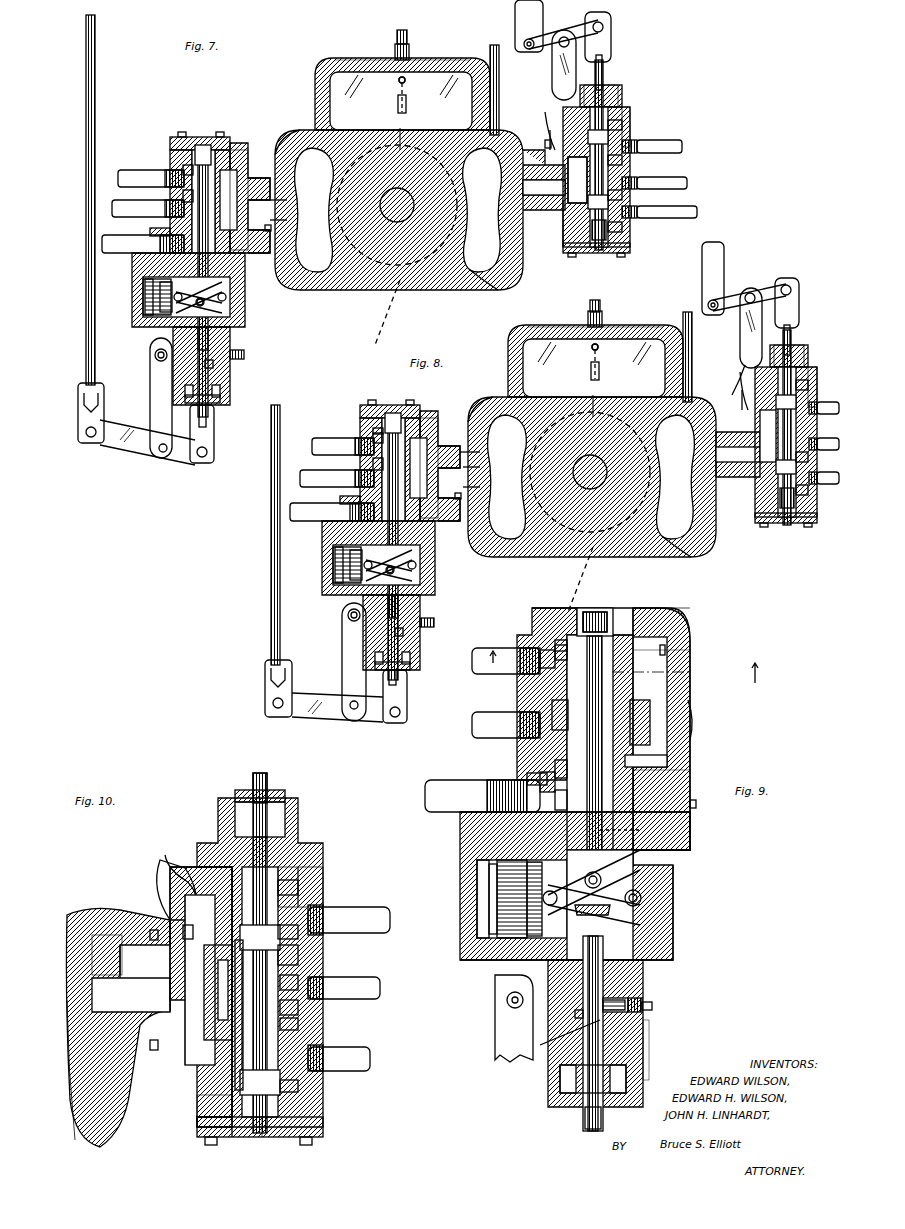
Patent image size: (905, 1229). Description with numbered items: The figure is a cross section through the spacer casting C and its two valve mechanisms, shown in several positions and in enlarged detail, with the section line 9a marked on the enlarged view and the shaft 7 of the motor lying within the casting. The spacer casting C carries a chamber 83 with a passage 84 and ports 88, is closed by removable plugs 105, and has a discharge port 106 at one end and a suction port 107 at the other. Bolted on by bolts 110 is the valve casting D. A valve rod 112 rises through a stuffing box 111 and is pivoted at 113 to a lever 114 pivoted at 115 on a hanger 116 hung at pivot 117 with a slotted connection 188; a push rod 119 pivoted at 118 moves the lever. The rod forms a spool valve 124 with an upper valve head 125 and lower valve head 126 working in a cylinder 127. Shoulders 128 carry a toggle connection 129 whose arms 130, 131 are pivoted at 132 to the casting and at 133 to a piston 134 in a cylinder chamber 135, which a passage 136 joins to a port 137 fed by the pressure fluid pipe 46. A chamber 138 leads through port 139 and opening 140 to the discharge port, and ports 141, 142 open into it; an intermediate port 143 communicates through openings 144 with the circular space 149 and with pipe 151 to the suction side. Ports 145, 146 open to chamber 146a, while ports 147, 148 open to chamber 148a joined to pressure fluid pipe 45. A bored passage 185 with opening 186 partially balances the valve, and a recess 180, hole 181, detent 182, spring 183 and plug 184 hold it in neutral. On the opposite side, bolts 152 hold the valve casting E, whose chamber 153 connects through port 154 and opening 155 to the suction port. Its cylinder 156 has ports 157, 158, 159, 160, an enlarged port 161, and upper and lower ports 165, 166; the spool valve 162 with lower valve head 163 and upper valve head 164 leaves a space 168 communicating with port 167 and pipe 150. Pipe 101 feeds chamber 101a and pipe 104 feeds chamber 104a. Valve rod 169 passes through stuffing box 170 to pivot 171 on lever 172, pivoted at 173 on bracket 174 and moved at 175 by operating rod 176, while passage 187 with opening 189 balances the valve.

In FIG. 7, the shaft 7 is at (380, 316).
In FIG. 9, the section line 9a— 9a is at (630, 666).
In FIG. 7, the pressure fluid pipe 45 is at (140, 170).
In FIG. 8, the pressure fluid pipe 45 is at (330, 438).
In FIG. 9, the pressure fluid pipe 45 is at (478, 648).
In FIG. 7, the pressure fluid pipe 46 is at (118, 240).
In FIG. 8, the pressure fluid pipe 46 is at (307, 522).
In FIG. 9, the pressure fluid pipe 46 is at (425, 796).
In FIG. 7, the chamber 83 is at (345, 62).
In FIG. 8, the chamber 83 is at (545, 328).
In FIG. 7, the passage 84 is at (398, 84).
In FIG. 8, the passage 84 is at (600, 349).
In FIG. 7, the ports 88 is at (405, 148).
In FIG. 8, the ports 88 is at (600, 412).
In FIG. 7, the pipe 101 is at (683, 145).
In FIG. 10, the pipe 101 is at (380, 915).
In FIG. 10, the chamber 101a is at (323, 912).
In FIG. 7, the pipe 104 is at (697, 212).
In FIG. 8, the pipe 104 is at (834, 485).
In FIG. 10, the pipe 104 is at (370, 1075).
In FIG. 10, the chamber 104a is at (325, 1048).
In FIG. 7, the removable plugs 105 is at (405, 40).
In FIG. 8, the removable plugs 105 is at (598, 310).
In FIG. 7, the discharge port 106 is at (305, 150).
In FIG. 8, the discharge port 106 is at (508, 548).
In FIG. 7, the suction port 107 is at (478, 275).
In FIG. 8, the suction port 107 is at (670, 545).
In FIG. 10, the suction port 107 is at (75, 1140).
In FIG. 7, the bolts 110 is at (255, 178).
In FIG. 8, the bolts 110 is at (445, 446).
In FIG. 7, the stuffing box 111 is at (222, 400).
In FIG. 8, the stuffing box 111 is at (408, 672).
In FIG. 9, the stuffing box 111 is at (565, 1080).
In FIG. 7, the valve rod 112 is at (208, 415).
In FIG. 8, the valve rod 112 is at (398, 676).
In FIG. 9, the valve rod 112 is at (585, 1120).
In FIG. 7, the pivotal connection 113 is at (208, 456).
In FIG. 8, the pivotal connection 113 is at (395, 720).
In FIG. 7, the lever 114 is at (176, 465).
In FIG. 8, the lever 114 is at (337, 707).
In FIG. 7, the pivot 115 is at (160, 455).
In FIG. 8, the pivot 115 is at (354, 705).
In FIG. 7, the hanger 116 is at (150, 404).
In FIG. 8, the hanger 116 is at (343, 660).
In FIG. 9, the hanger 116 is at (495, 1035).
In FIG. 7, the pivot 117 is at (155, 357).
In FIG. 8, the pivot 117 is at (349, 612).
In FIG. 9, the pivot 117 is at (508, 1002).
In FIG. 7, the pivot 118 is at (88, 438).
In FIG. 8, the pivot 118 is at (270, 708).
In FIG. 7, the push rod 119 is at (96, 40).
In FIG. 8, the push rod 119 is at (272, 610).
In FIG. 8, the spool valve 124 is at (373, 461).
In FIG. 9, the spool valve 124 is at (670, 660).
In FIG. 7, the upper valve head 125 is at (203, 148).
In FIG. 8, the upper valve head 125 is at (393, 416).
In FIG. 9, the upper valve head 125 is at (680, 628).
In FIG. 9, the lower valve head 126 is at (690, 778).
In FIG. 9, the cylinder 127 is at (690, 672).
In FIG. 7, the shoulders 128 is at (232, 330).
In FIG. 8, the shoulders 128 is at (422, 600).
In FIG. 9, the shoulders 128 is at (690, 850).
In FIG. 7, the toggle connection 129 is at (200, 302).
In FIG. 8, the toggle connection 129 is at (400, 565).
In FIG. 9, the toggle connection 129 is at (605, 878).
In FIG. 9, the toggle arm 130 is at (642, 900).
In FIG. 9, the toggle arm 131 is at (477, 880).
In FIG. 7, the pivot 132 is at (240, 298).
In FIG. 8, the pivot 132 is at (430, 566).
In FIG. 9, the pivot 132 is at (645, 905).
In FIG. 7, the pivot 133 is at (158, 297).
In FIG. 8, the pivot 133 is at (340, 562).
In FIG. 9, the pivot 133 is at (497, 894).
In FIG. 7, the piston 134 is at (148, 312).
In FIG. 8, the piston 134 is at (338, 576).
In FIG. 9, the piston 134 is at (527, 905).
In FIG. 7, the cylinder chamber 135 is at (143, 297).
In FIG. 8, the cylinder chamber 135 is at (330, 592).
In FIG. 9, the cylinder chamber 135 is at (489, 925).
In FIG. 7, the passage 136 is at (134, 262).
In FIG. 8, the passage 136 is at (335, 530).
In FIG. 9, the passage 136 is at (478, 835).
In FIG. 7, the port 137 is at (160, 238).
In FIG. 8, the port 137 is at (340, 504).
In FIG. 9, the port 137 is at (527, 778).
In FIG. 9, the chamber 138 is at (670, 645).
In FIG. 7, the port 139 is at (288, 202).
In FIG. 8, the port 139 is at (486, 475).
In FIG. 9, the port 139 is at (692, 722).
In FIG. 7, the opening 140 is at (288, 205).
In FIG. 8, the opening 140 is at (487, 470).
In FIG. 7, the port 141 is at (258, 255).
In FIG. 8, the port 141 is at (446, 516).
In FIG. 9, the port 141 is at (696, 806).
In FIG. 7, the port 142 is at (232, 150).
In FIG. 8, the port 142 is at (425, 418).
In FIG. 9, the port 142 is at (606, 660).
In FIG. 9, the intermediate port 143 is at (650, 725).
In FIG. 7, the openings 144 is at (183, 193).
In FIG. 9, the openings 144 is at (560, 710).
In FIG. 9, the port 145 is at (555, 796).
In FIG. 9, the port 146 is at (540, 778).
In FIG. 9, the chamber 146a is at (555, 765).
In FIG. 9, the port 147 is at (540, 655).
In FIG. 8, the port 148 is at (373, 430).
In FIG. 9, the port 148 is at (555, 645).
In FIG. 7, the chamber 148a is at (184, 166).
In FIG. 8, the chamber 148a is at (373, 435).
In FIG. 9, the chamber 148a is at (560, 640).
In FIG. 8, the circular space 149 is at (486, 449).
In FIG. 9, the circular space 149 is at (667, 760).
In FIG. 7, the pipe 150 is at (688, 183).
In FIG. 8, the pipe 150 is at (836, 437).
In FIG. 10, the pipe 150 is at (380, 988).
In FIG. 9, the pipe 151 is at (475, 715).
In FIG. 7, the bolts 152 is at (545, 147).
In FIG. 10, the bolts 152 is at (152, 930).
In FIG. 10, the chamber 153 is at (190, 930).
In FIG. 7, the port 154 is at (552, 150).
In FIG. 8, the port 154 is at (748, 410).
In FIG. 10, the port 154 is at (120, 945).
In FIG. 7, the opening 155 is at (522, 186).
In FIG. 8, the opening 155 is at (735, 447).
In FIG. 10, the opening 155 is at (95, 935).
In FIG. 7, the cylinder 156 is at (632, 122).
In FIG. 8, the cylinder 156 is at (790, 523).
In FIG. 10, the cylinder 156 is at (322, 870).
In FIG. 8, the port 157 is at (810, 390).
In FIG. 10, the port 157 is at (325, 890).
In FIG. 8, the port 158 is at (835, 408).
In FIG. 10, the port 158 is at (325, 940).
In FIG. 7, the port 159 is at (630, 198).
In FIG. 8, the port 159 is at (810, 460).
In FIG. 10, the port 159 is at (325, 1020).
In FIG. 10, the port 160 is at (325, 1083).
In FIG. 10, the enlarged port 161 is at (325, 985).
In FIG. 7, the spool valve 162 is at (630, 165).
In FIG. 10, the spool valve 162 is at (325, 1005).
In FIG. 7, the lower valve head 163 is at (570, 225).
In FIG. 10, the lower valve head 163 is at (230, 1140).
In FIG. 7, the upper valve head 164 is at (628, 130).
In FIG. 10, the upper valve head 164 is at (185, 933).
In FIG. 7, the upper port 165 is at (575, 140).
In FIG. 8, the upper port 165 is at (765, 400).
In FIG. 10, the upper port 165 is at (185, 895).
In FIG. 7, the lower port 166 is at (630, 228).
In FIG. 8, the lower port 166 is at (760, 505).
In FIG. 10, the lower port 166 is at (200, 1105).
In FIG. 7, the port 167 is at (575, 200).
In FIG. 10, the port 167 is at (220, 990).
In FIG. 7, the space 168 is at (620, 240).
In FIG. 8, the space 168 is at (760, 482).
In FIG. 10, the space 168 is at (325, 960).
In FIG. 7, the valve rod 169 is at (605, 72).
In FIG. 8, the valve rod 169 is at (792, 335).
In FIG. 10, the valve rod 169 is at (270, 778).
In FIG. 7, the stuffing box 170 is at (622, 88).
In FIG. 8, the stuffing box 170 is at (800, 350).
In FIG. 10, the stuffing box 170 is at (285, 795).
In FIG. 7, the pivot 171 is at (612, 26).
In FIG. 8, the pivot 171 is at (790, 283).
In FIG. 7, the lever 172 is at (598, 26).
In FIG. 8, the lever 172 is at (765, 284).
In FIG. 7, the pivot 173 is at (567, 35).
In FIG. 8, the pivot 173 is at (752, 290).
In FIG. 8, the bracket 174 is at (742, 360).
In FIG. 7, the pivot 175 is at (527, 50).
In FIG. 8, the pivot 175 is at (708, 304).
In FIG. 7, the operating rod 176 is at (543, 8).
In FIG. 8, the operating rod 176 is at (718, 245).
In FIG. 7, the recess 180 is at (232, 372).
In FIG. 8, the recess 180 is at (422, 630).
In FIG. 9, the recess 180 is at (600, 1002).
In FIG. 9, the hole 181 is at (659, 1050).
In FIG. 9, the detent 182 is at (560, 1040).
In FIG. 9, the spring 183 is at (615, 1000).
In FIG. 7, the plug 184 is at (245, 355).
In FIG. 8, the plug 184 is at (435, 623).
In FIG. 9, the plug 184 is at (655, 1006).
In FIG. 9, the bored passage 185 is at (600, 612).
In FIG. 9, the opening 186 is at (688, 830).
In FIG. 10, the passage 187 is at (264, 1140).
In FIG. 7, the slotted connection 188 is at (157, 352).
In FIG. 8, the slotted connection 188 is at (352, 620).
In FIG. 9, the slotted connection 188 is at (510, 996).
In FIG. 10, the opening 189 is at (325, 880).
In FIG. 7, the spacer casting C is at (333, 60).
In FIG. 8, the spacer casting C is at (712, 548).
In FIG. 10, the spacer casting C is at (77, 910).
In FIG. 7, the valve casting D is at (240, 142).
In FIG. 8, the valve casting D is at (410, 509).
In FIG. 9, the valve casting D is at (703, 612).
In FIG. 7, the valve casting E is at (630, 115).
In FIG. 8, the valve casting E is at (818, 388).
In FIG. 10, the valve casting E is at (323, 1104).